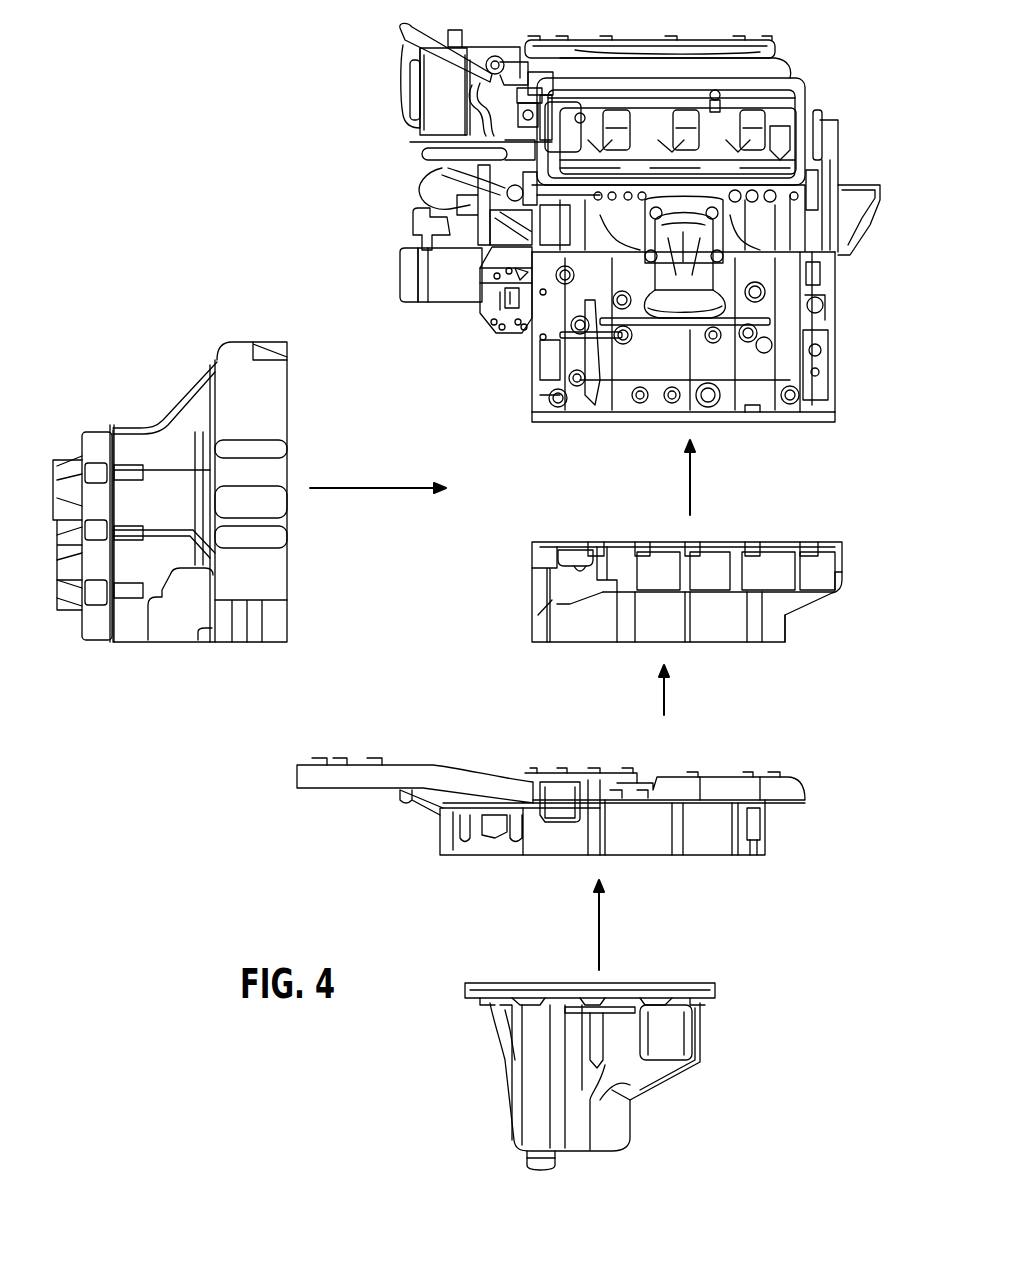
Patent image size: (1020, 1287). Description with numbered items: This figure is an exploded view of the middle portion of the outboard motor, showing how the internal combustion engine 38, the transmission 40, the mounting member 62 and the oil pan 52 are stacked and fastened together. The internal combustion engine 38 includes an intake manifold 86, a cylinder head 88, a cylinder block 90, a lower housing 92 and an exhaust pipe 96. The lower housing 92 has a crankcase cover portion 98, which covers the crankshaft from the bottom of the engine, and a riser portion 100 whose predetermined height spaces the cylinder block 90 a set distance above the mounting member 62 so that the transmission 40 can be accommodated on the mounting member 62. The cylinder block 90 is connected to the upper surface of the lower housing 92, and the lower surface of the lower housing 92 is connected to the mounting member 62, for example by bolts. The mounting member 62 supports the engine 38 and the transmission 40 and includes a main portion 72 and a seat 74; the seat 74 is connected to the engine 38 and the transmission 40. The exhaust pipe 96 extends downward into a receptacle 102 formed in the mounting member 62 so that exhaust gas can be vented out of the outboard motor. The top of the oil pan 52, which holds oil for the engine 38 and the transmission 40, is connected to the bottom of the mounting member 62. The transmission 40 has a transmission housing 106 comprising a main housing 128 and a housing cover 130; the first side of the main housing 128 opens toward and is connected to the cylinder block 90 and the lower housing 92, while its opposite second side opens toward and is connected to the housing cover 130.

The internal combustion engine 38 is at (392, 174).
The intake manifold 86 is at (692, 42).
The cylinder head 88 is at (838, 137).
The cylinder block 90 is at (838, 396).
The exhaust pipe 96 is at (683, 300).
The transmission 40 is at (141, 381).
The transmission housing 106 is at (192, 376).
The main housing 128 is at (290, 417).
The housing cover 130 is at (55, 462).
The lower housing 92 is at (512, 595).
The crankcase cover portion 98 is at (835, 574).
The riser portion 100 is at (800, 630).
The main portion 72 is at (657, 857).
The seat 74 is at (722, 772).
The mounting member 62 is at (778, 845).
The receptacle 102 is at (560, 816).
The oil pan 52 is at (700, 1040).